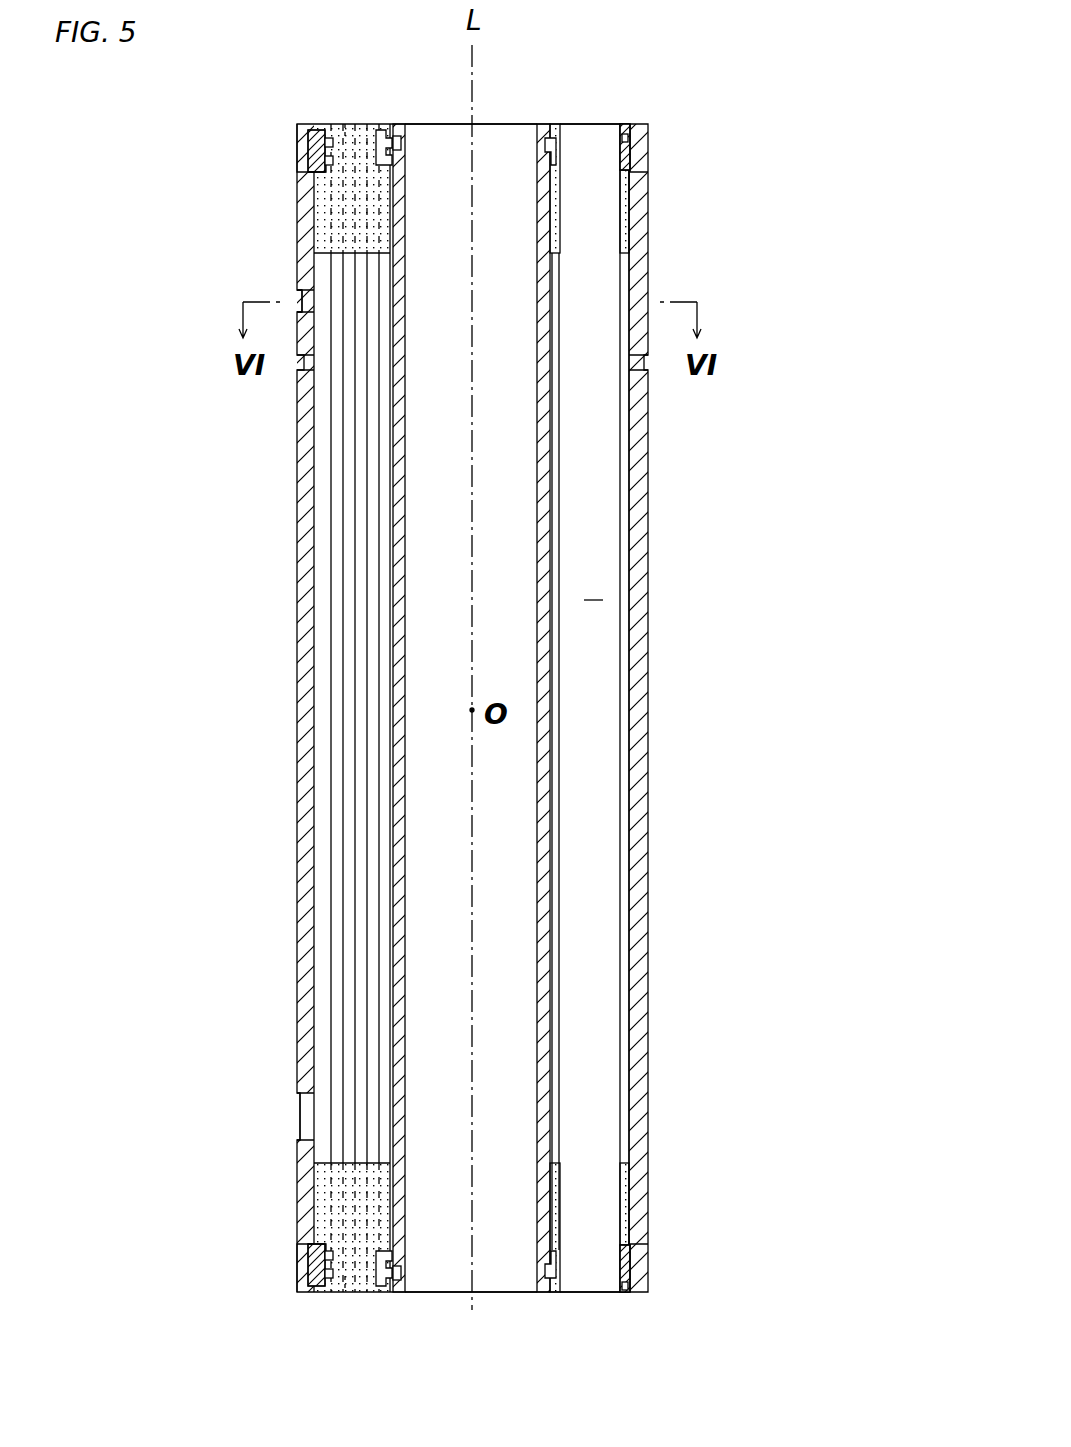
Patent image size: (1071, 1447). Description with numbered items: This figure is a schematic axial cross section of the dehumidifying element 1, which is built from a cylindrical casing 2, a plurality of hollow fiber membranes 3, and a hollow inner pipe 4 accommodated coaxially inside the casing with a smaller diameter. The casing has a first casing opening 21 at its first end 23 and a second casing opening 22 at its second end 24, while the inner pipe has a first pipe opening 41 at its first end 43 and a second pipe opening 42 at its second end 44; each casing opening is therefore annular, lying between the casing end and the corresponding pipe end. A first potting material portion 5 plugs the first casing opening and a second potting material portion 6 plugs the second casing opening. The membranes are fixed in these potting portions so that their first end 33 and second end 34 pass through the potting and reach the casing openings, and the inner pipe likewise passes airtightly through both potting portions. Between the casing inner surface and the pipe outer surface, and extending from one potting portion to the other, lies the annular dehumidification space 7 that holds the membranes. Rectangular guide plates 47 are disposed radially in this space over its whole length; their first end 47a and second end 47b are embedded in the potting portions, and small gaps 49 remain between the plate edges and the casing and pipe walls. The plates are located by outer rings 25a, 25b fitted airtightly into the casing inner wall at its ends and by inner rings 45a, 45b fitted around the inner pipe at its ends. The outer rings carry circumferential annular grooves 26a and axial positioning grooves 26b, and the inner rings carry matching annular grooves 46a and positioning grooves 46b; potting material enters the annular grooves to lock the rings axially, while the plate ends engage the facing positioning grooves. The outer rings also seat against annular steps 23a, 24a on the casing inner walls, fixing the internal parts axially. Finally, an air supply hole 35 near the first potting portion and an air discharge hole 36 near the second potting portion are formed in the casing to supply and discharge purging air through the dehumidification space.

The dehumidifying element 1 is at (735, 76).
The cylindrical casing 2 is at (632, 775).
The hollow fiber membranes 3 is at (350, 550).
The inner pipe 4 is at (398, 790).
The first potting material portion 5 is at (330, 205).
The second potting material portion 6 is at (340, 1170).
The dehumidification space 7 is at (593, 585).
The first casing opening 21 is at (598, 126).
The second casing opening 22 is at (598, 1293).
The first end of the cylindrical casing 23 is at (645, 132).
The annular step 23a is at (328, 180).
The second end of the cylindrical casing 24 is at (645, 1278).
The annular step 24a is at (318, 1240).
The outer ring 25a is at (316, 126).
The outer ring 25b is at (316, 1268).
The annular grooves 26a is at (322, 159).
The positioning grooves 26b is at (632, 128).
The first end of the hollow fiber membranes 33 is at (348, 124).
The second end of the hollow fiber membranes 34 is at (346, 1292).
The air supply hole 35 is at (300, 297).
The air discharge hole 36 is at (298, 1112).
The first pipe opening 41 is at (493, 126).
The second pipe opening 42 is at (487, 1292).
The first end of the inner pipe 43 is at (399, 127).
The second end of the inner pipe 44 is at (399, 1292).
The inner ring 45a is at (549, 128).
The inner ring 45b is at (550, 1292).
The annular grooves 46a is at (387, 130).
The positioning grooves 46b is at (557, 127).
The guide plate 47 is at (605, 421).
The first end of the guide plate 47a is at (632, 150).
The second end of the guide plate 47b is at (623, 1270).
The gaps 49 is at (553, 928).